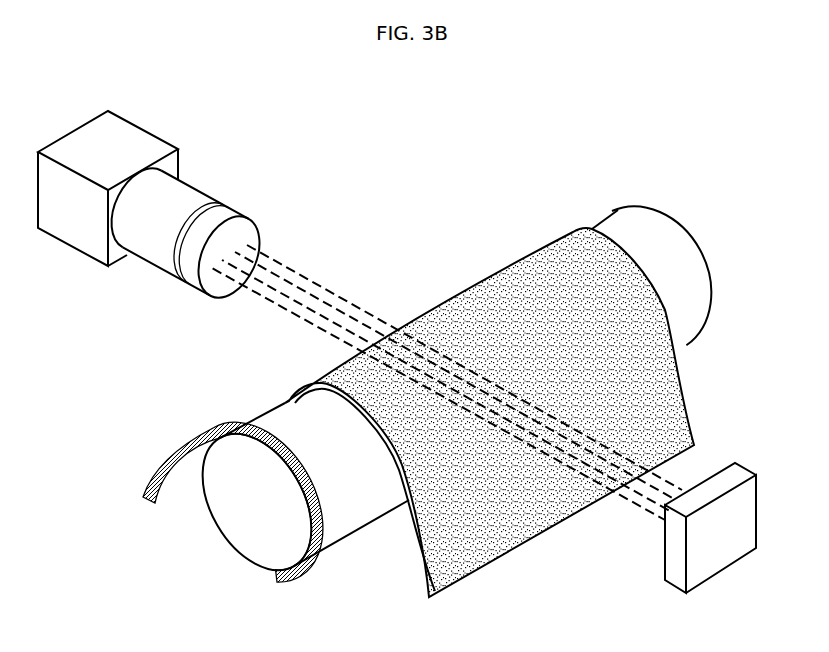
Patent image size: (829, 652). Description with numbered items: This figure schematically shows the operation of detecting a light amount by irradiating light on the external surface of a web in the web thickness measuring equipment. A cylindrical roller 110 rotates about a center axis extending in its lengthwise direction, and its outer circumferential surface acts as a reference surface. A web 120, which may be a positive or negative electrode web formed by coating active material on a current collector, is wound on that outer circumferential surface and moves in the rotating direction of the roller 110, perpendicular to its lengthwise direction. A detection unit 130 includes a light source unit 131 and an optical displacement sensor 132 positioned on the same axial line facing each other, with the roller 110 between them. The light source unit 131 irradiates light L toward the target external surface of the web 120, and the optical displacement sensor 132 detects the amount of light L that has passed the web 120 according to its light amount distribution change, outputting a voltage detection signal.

The roller 110 is at (335, 523).
The web 120 is at (503, 535).
The detection unit 130 is at (767, 147).
The light source unit 131 is at (222, 213).
The optical displacement sensor 132 is at (742, 474).
The light L is at (293, 313).